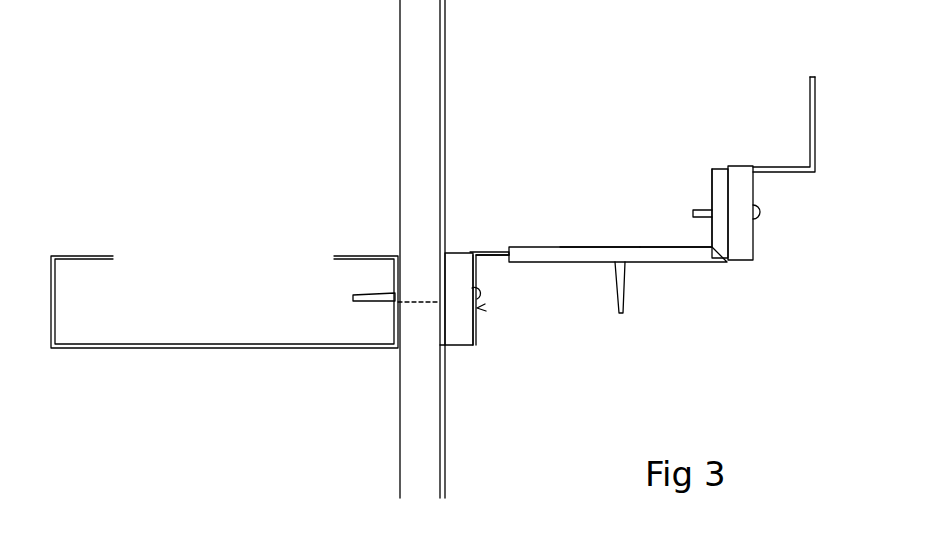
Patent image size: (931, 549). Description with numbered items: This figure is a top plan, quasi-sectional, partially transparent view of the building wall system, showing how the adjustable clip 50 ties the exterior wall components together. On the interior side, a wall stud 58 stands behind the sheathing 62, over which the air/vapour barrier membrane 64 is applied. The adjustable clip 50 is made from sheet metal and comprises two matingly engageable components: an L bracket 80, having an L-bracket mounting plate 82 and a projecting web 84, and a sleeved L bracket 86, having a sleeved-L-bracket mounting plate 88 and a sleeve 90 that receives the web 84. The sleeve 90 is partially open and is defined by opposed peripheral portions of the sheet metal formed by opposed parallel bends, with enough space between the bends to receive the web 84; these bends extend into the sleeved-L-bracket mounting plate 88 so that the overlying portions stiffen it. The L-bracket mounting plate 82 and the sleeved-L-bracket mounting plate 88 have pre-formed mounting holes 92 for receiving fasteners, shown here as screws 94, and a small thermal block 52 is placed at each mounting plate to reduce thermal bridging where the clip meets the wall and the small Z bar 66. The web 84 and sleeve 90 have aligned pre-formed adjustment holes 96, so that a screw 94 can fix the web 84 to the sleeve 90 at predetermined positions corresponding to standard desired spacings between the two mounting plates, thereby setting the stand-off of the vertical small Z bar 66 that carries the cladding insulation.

The adjustable clip 50 is at (596, 236).
The small thermal block 52 is at (471, 217).
The wall stud 58 is at (229, 348).
The sheathing 62 is at (400, 112).
The air/vapour barrier membrane 64 is at (445, 58).
The small Z bar 66 is at (810, 93).
The L bracket 80 is at (477, 248).
The L-bracket mounting plate 82 is at (478, 330).
The projecting web 84 is at (493, 257).
The sleeved L bracket 86 is at (666, 246).
The sleeved-L-bracket mounting plate 88 is at (712, 168).
The sleeve 90 is at (670, 265).
The mounting hole 92 is at (708, 202).
The screw 94 is at (352, 295).
The adjustment hole 96 is at (617, 246).